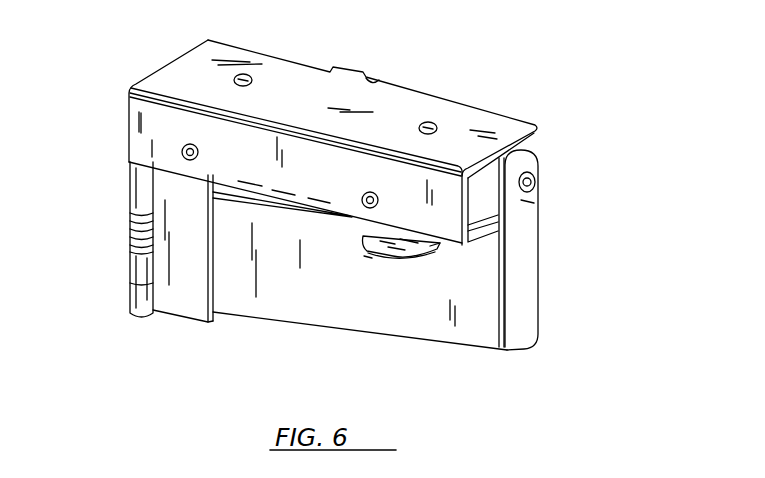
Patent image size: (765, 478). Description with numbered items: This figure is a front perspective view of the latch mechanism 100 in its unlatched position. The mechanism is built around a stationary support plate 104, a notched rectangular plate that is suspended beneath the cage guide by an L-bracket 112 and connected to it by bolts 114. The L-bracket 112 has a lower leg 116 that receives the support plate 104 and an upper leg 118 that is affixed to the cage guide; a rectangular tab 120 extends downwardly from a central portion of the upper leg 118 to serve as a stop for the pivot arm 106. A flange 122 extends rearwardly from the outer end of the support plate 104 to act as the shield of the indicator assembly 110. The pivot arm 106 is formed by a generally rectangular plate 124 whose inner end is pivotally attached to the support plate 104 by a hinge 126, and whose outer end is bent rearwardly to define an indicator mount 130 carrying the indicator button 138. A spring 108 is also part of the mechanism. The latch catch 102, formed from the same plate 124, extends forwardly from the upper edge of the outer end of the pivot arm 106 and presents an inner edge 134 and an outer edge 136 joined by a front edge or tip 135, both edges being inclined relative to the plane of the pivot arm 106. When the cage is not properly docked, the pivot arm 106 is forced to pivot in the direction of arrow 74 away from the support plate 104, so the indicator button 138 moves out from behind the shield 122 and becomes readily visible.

The latch mechanism 100 is at (579, 115).
The latch catch 102 is at (454, 251).
The stationary support plate 104 is at (182, 320).
The pivot arm 106 is at (430, 348).
The spring 108 is at (130, 228).
The indicator assembly 110 is at (554, 157).
The L-bracket 112 is at (493, 98).
The bolts 114 is at (181, 151).
The lower leg 116 is at (139, 118).
The upper leg 118 is at (403, 107).
The rectangular tab 120 is at (368, 73).
The flange 122 is at (473, 203).
The rectangular plate 124 is at (410, 317).
The hinge 126 is at (130, 261).
The indicator mount 130 is at (534, 202).
The inner edge 134 is at (368, 238).
The front edge or tip 135 is at (362, 250).
The outer edge 136 is at (418, 248).
The indicator button 138 is at (535, 180).
The arrow 74 is at (357, 266).